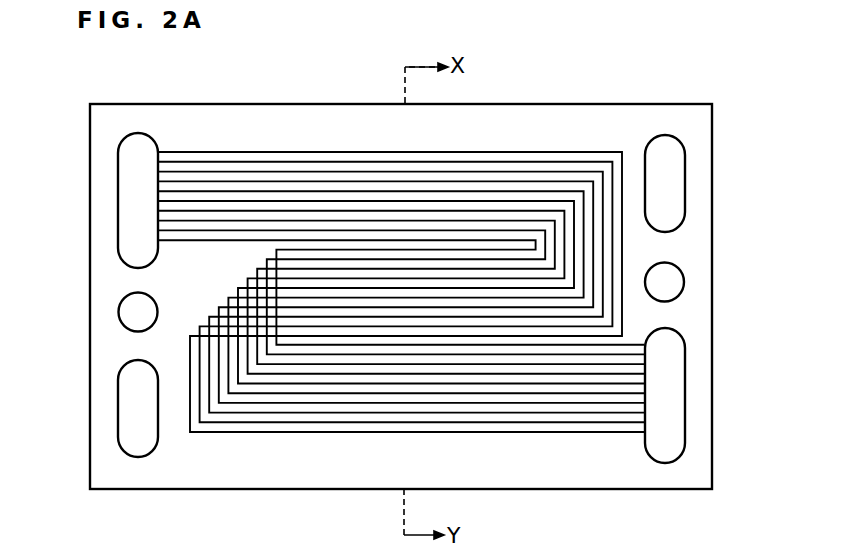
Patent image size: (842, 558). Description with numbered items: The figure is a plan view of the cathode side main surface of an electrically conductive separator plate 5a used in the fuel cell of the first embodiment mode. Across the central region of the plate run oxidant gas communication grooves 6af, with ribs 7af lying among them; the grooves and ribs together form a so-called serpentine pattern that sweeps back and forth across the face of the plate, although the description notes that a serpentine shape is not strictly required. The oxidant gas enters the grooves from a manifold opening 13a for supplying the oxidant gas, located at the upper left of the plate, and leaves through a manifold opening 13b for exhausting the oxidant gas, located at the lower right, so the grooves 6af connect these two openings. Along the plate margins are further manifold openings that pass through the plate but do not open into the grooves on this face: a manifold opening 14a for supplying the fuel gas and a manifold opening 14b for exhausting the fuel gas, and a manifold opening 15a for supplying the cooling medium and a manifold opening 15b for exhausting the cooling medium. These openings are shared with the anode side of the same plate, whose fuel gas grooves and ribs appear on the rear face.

The electrically conductive separator plate 5a is at (241, 104).
The oxidant gas communication grooves 6af is at (308, 158).
The ribs 7af is at (365, 170).
The manifold opening for supplying the oxidant gas 13a is at (132, 182).
The manifold opening for exhausting the oxidant gas 13b is at (668, 385).
The manifold opening for supplying the fuel gas 14a is at (673, 177).
The manifold opening for exhausting the fuel gas 14b is at (135, 400).
The manifold opening for supplying the cooling medium 15a is at (135, 313).
The manifold opening for exhausting the cooling medium 15b is at (667, 283).